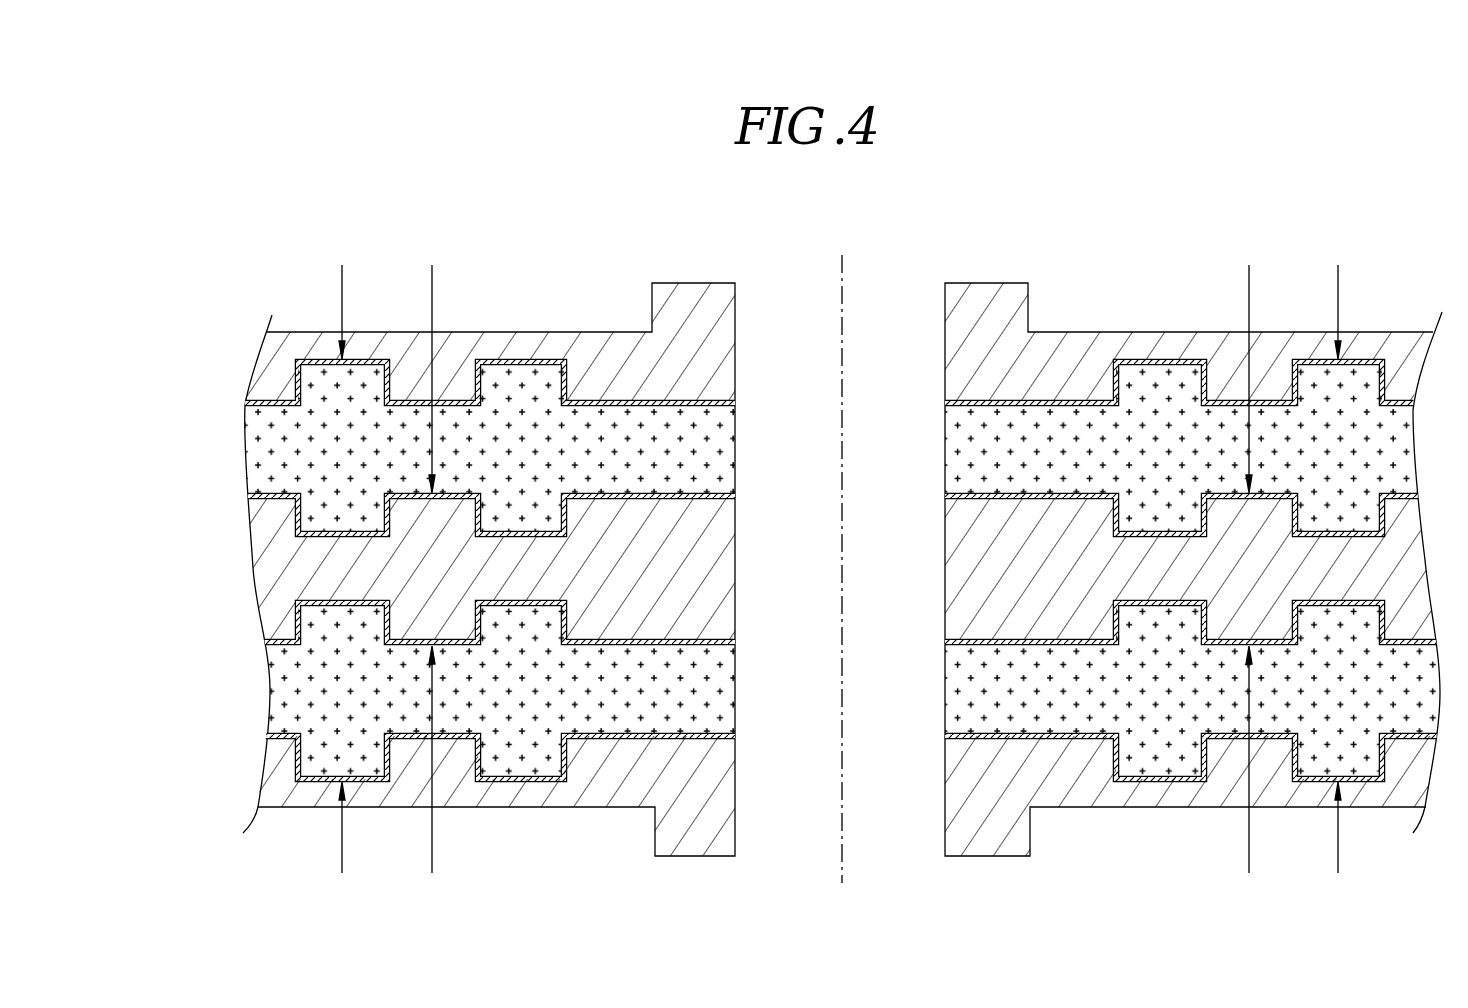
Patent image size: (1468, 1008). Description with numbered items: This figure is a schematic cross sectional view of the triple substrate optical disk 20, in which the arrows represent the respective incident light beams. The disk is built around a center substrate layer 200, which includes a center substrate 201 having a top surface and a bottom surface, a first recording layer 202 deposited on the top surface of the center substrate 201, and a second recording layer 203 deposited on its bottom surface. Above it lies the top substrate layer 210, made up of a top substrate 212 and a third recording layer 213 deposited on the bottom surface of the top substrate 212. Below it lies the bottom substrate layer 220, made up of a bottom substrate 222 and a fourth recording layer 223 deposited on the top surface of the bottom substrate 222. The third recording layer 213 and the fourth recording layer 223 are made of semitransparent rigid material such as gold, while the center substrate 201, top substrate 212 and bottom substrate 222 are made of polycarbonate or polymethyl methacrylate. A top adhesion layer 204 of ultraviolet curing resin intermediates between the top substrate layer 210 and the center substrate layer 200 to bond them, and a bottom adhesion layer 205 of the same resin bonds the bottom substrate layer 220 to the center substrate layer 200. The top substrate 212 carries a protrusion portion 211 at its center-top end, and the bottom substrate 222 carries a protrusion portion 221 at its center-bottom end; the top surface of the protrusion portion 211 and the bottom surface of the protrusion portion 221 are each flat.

The triple substrate optical disk 20 is at (1004, 221).
The center substrate layer 200 is at (812, 568).
The center substrate 201 is at (715, 573).
The first recording layer 202 is at (597, 497).
The second recording layer 203 is at (597, 643).
The top adhesion layer 204 is at (715, 437).
The bottom adhesion layer 205 is at (715, 685).
The top substrate layer 210 is at (812, 344).
The protrusion portion 211 is at (713, 305).
The top substrate 212 is at (722, 359).
The third recording layer 213 is at (600, 402).
The bottom substrate layer 220 is at (812, 795).
The protrusion portion 221 is at (718, 832).
The bottom substrate 222 is at (718, 777).
The fourth recording layer 223 is at (597, 738).